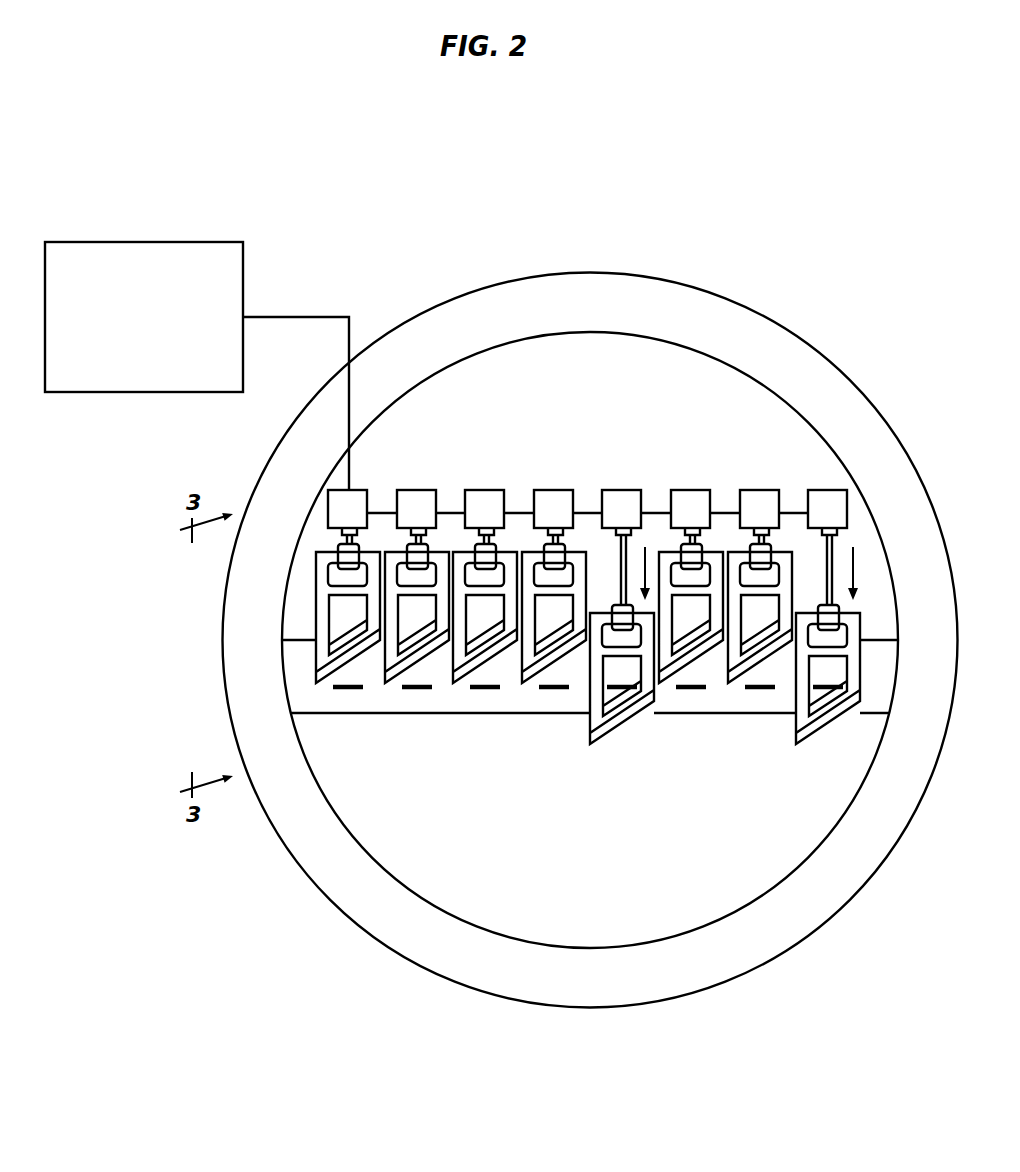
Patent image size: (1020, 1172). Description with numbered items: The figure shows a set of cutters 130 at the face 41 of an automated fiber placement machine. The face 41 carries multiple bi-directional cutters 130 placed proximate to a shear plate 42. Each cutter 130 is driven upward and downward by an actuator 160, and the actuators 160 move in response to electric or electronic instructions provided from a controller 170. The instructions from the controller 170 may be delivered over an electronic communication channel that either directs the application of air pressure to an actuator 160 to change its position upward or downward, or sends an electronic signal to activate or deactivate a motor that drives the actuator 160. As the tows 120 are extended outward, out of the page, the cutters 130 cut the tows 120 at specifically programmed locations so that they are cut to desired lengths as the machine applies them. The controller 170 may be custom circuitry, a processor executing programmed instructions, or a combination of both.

The face 41 is at (830, 358).
The shear plate 42 is at (300, 688).
The tow 120 is at (348, 689).
The cutter 130 is at (316, 613).
The actuator 160 is at (360, 490).
The controller 170 is at (163, 359).